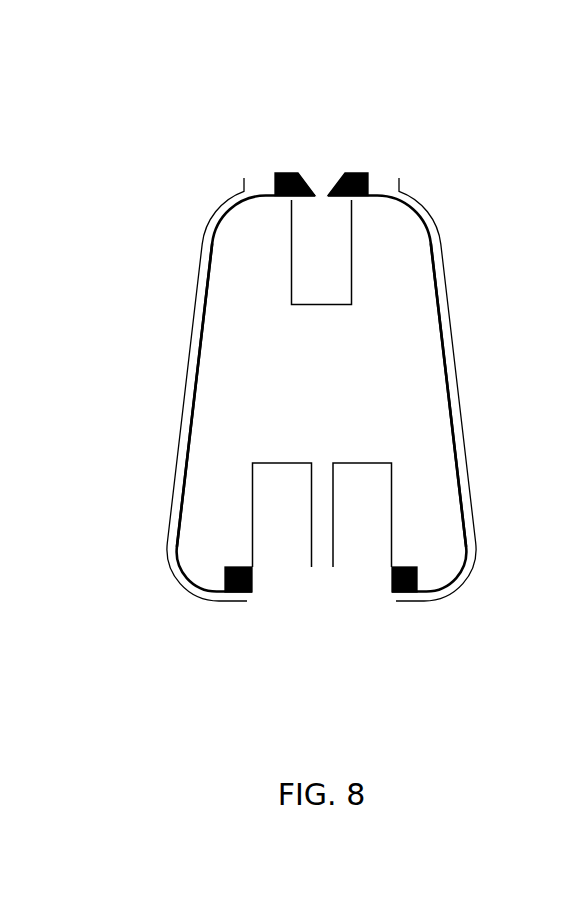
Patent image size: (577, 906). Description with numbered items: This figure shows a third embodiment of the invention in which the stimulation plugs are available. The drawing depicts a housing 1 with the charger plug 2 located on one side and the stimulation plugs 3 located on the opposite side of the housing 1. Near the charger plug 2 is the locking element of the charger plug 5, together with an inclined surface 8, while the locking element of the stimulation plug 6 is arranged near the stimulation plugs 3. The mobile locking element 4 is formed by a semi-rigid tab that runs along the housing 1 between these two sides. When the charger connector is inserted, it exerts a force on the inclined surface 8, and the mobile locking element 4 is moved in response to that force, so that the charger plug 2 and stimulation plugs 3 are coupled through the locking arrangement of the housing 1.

The housing 1 is at (150, 352).
The charger plug 2 is at (330, 172).
The stimulation plug 3 is at (277, 600).
The mobile locking element 4 is at (208, 292).
The locking element of the charger plug 5 is at (281, 161).
The locking element of the stimulation plug 6 is at (237, 592).
The inclined surface 8 is at (303, 180).